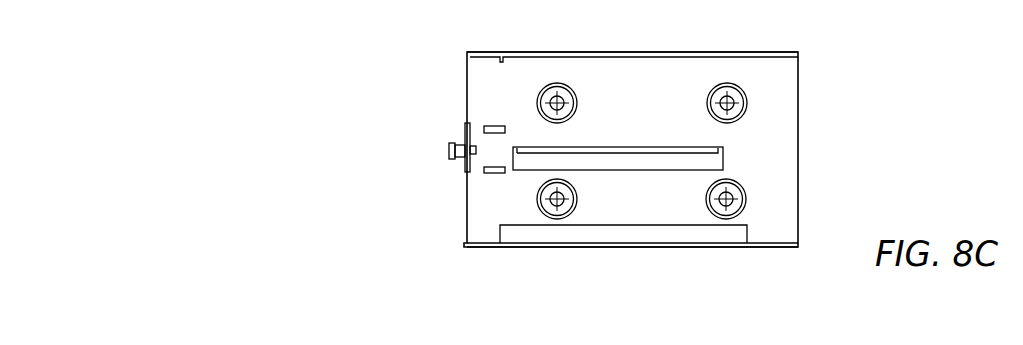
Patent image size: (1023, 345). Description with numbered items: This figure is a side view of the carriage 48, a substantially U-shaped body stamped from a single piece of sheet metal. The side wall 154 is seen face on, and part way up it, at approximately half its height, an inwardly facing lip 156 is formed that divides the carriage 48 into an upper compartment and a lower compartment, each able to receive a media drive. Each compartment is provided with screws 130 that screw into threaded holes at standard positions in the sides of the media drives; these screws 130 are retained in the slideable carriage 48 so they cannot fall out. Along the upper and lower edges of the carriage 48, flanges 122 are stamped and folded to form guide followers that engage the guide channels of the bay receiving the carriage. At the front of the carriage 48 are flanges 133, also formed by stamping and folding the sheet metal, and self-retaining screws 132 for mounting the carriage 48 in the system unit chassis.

The carriage 48 is at (421, 212).
The flanges 122 is at (763, 57).
The screws 130 is at (577, 92).
The screws 132 is at (450, 150).
The flanges 133 is at (465, 133).
The side wall 154 is at (788, 128).
The inwardly facing lip 156 is at (718, 153).